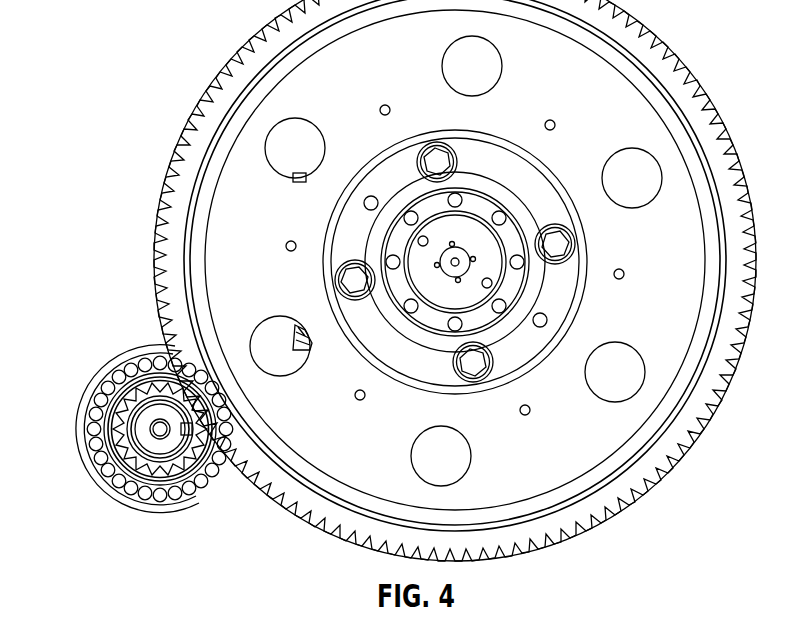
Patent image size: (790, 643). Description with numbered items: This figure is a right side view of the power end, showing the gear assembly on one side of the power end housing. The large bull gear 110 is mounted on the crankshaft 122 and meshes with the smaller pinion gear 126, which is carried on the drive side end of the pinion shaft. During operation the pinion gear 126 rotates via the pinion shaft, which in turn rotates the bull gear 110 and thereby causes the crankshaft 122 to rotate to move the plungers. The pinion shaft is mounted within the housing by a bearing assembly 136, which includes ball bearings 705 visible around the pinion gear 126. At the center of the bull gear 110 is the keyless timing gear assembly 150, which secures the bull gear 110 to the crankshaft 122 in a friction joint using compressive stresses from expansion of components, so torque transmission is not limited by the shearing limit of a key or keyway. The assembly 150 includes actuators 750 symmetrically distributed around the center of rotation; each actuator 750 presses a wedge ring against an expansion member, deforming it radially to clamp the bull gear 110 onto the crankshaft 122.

The bull gear 110 is at (585, 88).
The crankshaft 122 is at (460, 228).
The pinion gear 126 is at (102, 422).
The bearing assembly 136 is at (147, 514).
The keyless timing gear assembly 150 is at (515, 282).
The ball bearings 705 is at (190, 502).
The actuator 750 is at (500, 308).